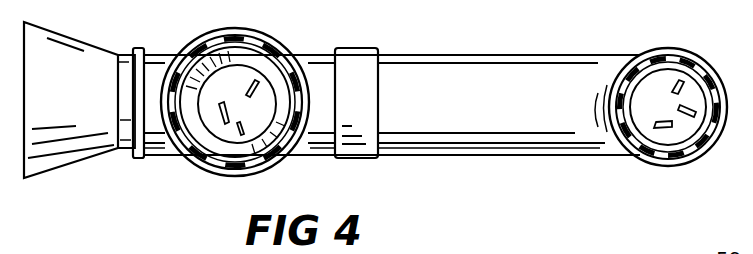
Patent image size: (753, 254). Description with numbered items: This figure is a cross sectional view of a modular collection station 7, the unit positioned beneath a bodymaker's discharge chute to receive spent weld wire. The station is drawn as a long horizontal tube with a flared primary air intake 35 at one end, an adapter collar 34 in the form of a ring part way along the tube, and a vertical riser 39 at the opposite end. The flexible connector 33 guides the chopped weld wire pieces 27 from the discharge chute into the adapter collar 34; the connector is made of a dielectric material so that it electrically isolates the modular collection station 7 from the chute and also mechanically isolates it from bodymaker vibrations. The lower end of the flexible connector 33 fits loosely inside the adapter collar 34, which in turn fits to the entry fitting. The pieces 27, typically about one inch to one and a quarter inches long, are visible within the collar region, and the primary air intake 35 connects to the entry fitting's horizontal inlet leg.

The modular collection station 7 is at (437, 55).
The pieces of spent weld wire 27 is at (242, 136).
The flexible connector 33 is at (237, 36).
The adapter collar 34 is at (268, 35).
The primary air intake 35 is at (76, 36).
The vertical riser 39 is at (696, 68).